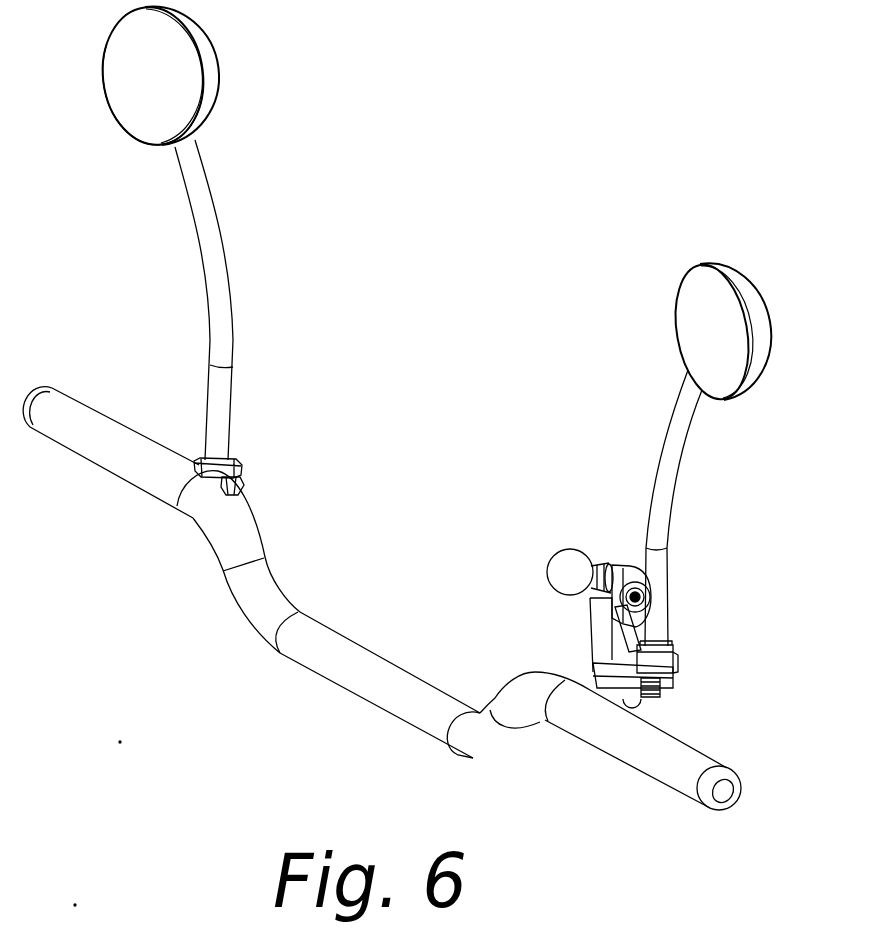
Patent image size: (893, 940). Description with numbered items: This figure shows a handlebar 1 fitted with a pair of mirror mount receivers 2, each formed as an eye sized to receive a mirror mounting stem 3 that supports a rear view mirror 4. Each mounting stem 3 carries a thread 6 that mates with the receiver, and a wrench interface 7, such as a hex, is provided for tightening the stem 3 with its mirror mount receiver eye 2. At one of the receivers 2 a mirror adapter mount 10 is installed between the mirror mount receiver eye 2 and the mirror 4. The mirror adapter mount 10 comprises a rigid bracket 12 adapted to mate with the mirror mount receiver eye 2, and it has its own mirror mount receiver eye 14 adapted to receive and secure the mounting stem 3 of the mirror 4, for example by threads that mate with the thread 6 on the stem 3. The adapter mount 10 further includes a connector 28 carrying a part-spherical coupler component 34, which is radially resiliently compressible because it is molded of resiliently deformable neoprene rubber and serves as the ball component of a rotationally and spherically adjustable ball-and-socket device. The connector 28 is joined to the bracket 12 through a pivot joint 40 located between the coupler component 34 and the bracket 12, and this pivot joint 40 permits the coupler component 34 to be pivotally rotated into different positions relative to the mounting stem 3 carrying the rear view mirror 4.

The handlebar 1 is at (377, 657).
The mirror mount receiver 2 is at (238, 490).
The mirror mounting stem 3 is at (210, 178).
The rear view mirror 4 is at (108, 55).
The thread 6 is at (660, 687).
The wrench interface 7 is at (233, 460).
The mirror adapter mount 10 is at (535, 512).
The bracket 12 is at (595, 667).
The mirror mount receiver eye 14 is at (677, 657).
The connector 28 is at (593, 635).
The part-spherical coupler component 34 is at (562, 565).
The pivot joint 40 is at (643, 587).